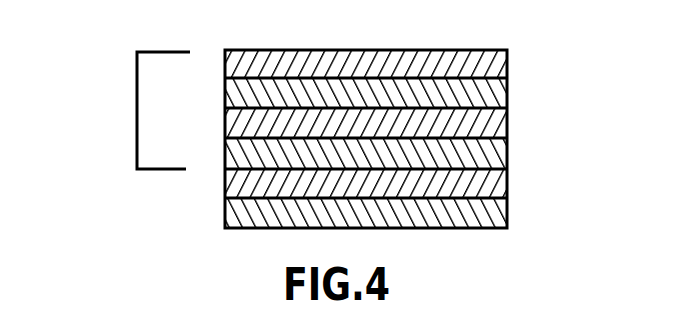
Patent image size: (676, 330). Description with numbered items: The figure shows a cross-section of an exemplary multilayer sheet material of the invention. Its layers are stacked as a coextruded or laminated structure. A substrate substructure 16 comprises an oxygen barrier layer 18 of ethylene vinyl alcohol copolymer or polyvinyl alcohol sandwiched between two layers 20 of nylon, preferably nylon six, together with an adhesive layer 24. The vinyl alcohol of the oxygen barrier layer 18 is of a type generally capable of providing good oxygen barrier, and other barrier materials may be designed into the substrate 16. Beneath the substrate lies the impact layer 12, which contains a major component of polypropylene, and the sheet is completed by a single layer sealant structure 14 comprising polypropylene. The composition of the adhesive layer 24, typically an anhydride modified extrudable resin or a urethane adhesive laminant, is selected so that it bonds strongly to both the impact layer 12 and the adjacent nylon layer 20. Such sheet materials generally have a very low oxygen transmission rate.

The substrate substructure 16 is at (137, 111).
The nylon layers 20 is at (508, 63).
The oxygen barrier layer 18 is at (508, 92).
The adhesive layer 24 is at (508, 153).
The impact layer 12 is at (508, 183).
The sealant structure 14 is at (508, 213).